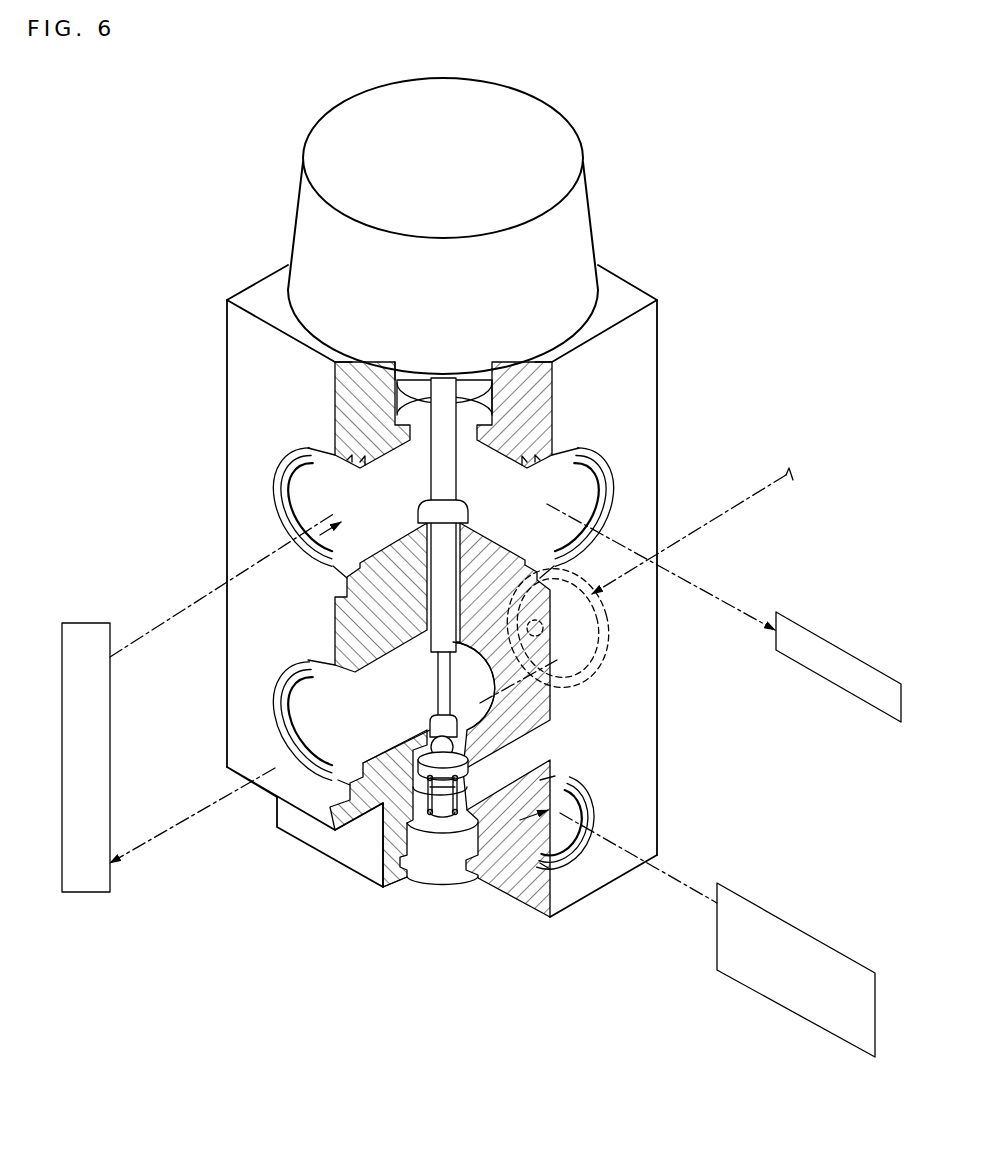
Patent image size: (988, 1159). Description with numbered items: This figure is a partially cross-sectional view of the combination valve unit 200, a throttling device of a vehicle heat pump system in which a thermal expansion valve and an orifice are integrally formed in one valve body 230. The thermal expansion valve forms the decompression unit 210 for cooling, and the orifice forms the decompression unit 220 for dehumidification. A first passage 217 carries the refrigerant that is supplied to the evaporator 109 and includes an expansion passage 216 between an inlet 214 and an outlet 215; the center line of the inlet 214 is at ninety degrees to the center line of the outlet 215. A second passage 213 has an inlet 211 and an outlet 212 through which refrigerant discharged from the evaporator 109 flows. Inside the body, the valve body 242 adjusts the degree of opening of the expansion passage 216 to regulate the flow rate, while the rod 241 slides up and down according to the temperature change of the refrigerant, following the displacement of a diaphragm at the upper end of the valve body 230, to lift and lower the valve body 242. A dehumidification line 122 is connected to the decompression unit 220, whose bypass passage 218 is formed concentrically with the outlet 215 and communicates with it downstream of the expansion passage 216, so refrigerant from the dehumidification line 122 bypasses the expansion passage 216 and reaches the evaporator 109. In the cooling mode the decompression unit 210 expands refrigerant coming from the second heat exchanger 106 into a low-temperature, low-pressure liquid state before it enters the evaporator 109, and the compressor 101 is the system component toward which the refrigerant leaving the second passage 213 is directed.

The combination valve unit 200 is at (168, 345).
The valve body 230 is at (630, 351).
The rod 241 is at (433, 580).
The valve body 242 is at (460, 745).
The expansion passage 216 is at (413, 825).
The outlet 215 is at (318, 800).
The inlet 214 is at (520, 817).
The first passage 217 is at (472, 966).
The outlet 212 is at (330, 502).
The inlet 211 is at (563, 490).
The second passage 213 is at (143, 427).
The decompression unit for cooling 210 is at (285, 538).
The evaporator 109 is at (83, 623).
The compressor 101 is at (826, 640).
The dehumidification line 122 is at (746, 507).
The decompression unit for dehumidification 220 is at (555, 639).
The bypass passage 218 is at (600, 612).
The second heat exchanger 106 is at (827, 945).